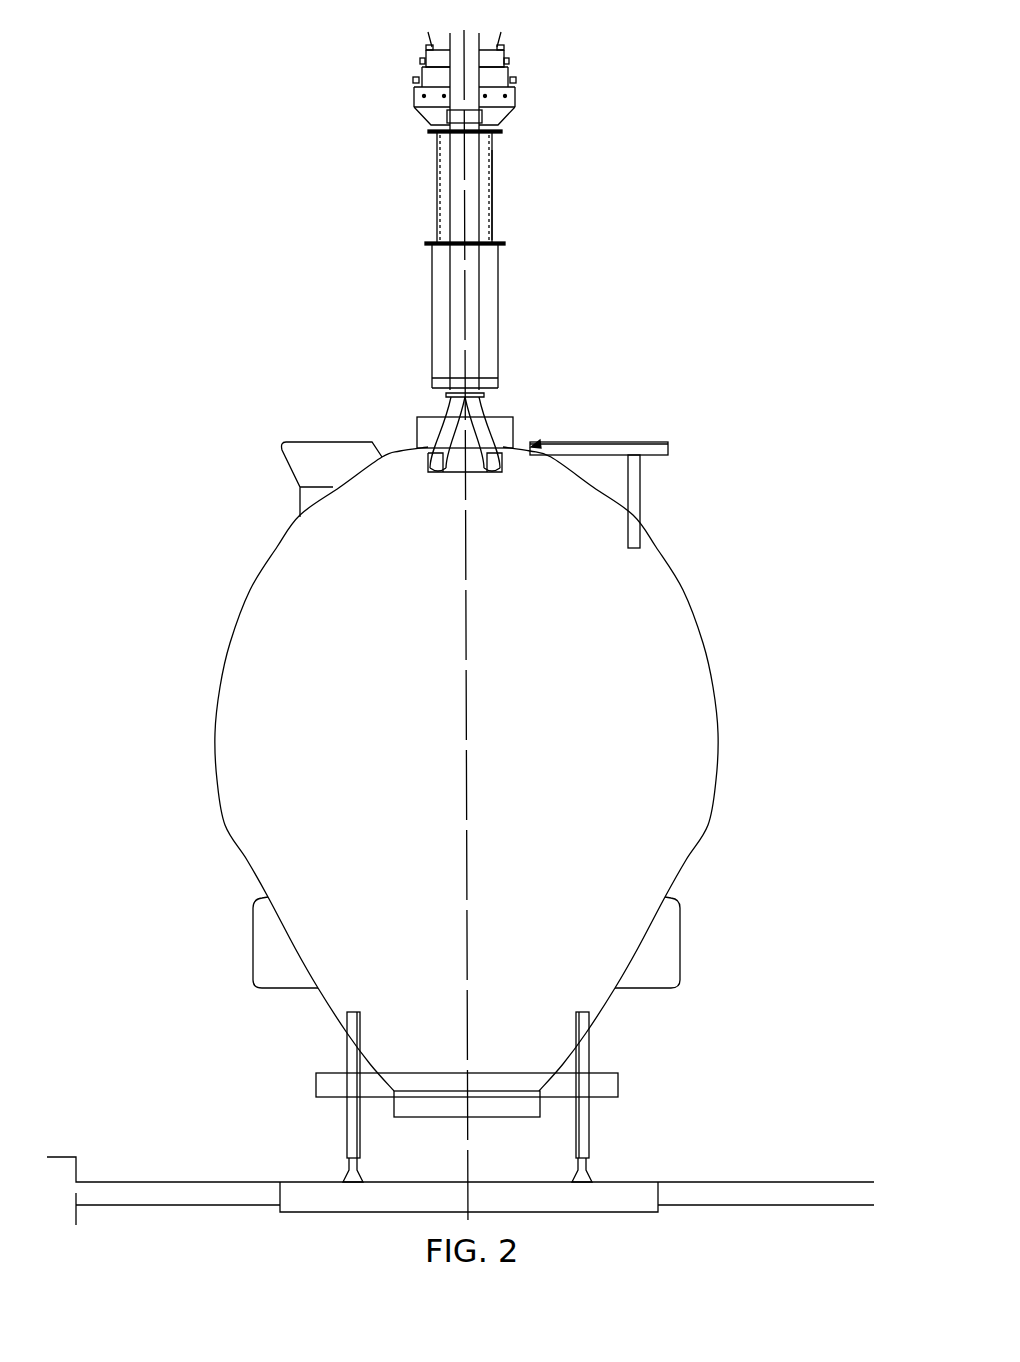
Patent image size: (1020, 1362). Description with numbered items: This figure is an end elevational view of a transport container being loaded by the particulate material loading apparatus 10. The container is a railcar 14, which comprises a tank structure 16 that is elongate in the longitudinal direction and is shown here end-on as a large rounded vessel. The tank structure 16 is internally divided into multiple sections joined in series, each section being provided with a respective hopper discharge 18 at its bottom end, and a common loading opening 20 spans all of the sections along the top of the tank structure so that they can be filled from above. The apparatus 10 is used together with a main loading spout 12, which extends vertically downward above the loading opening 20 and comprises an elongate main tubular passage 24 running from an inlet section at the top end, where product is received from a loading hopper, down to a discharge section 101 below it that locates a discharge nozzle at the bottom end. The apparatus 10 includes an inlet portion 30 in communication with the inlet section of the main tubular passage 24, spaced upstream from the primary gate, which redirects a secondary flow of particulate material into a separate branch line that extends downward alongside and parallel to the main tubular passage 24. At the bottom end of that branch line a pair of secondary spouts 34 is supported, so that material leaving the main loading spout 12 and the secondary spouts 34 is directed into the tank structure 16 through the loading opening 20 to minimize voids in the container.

The particulate material loading apparatus 10 is at (480, 153).
The main loading spout 12 is at (494, 290).
The railcar 14 is at (716, 707).
The tank structure 16 is at (566, 770).
The hopper discharge 18 is at (560, 1070).
The loading opening 20 is at (515, 431).
The main tubular passage 24 is at (437, 159).
The inlet portion 30 is at (458, 193).
The secondary spouts 34 is at (445, 425).
The discharge section 101 is at (497, 186).